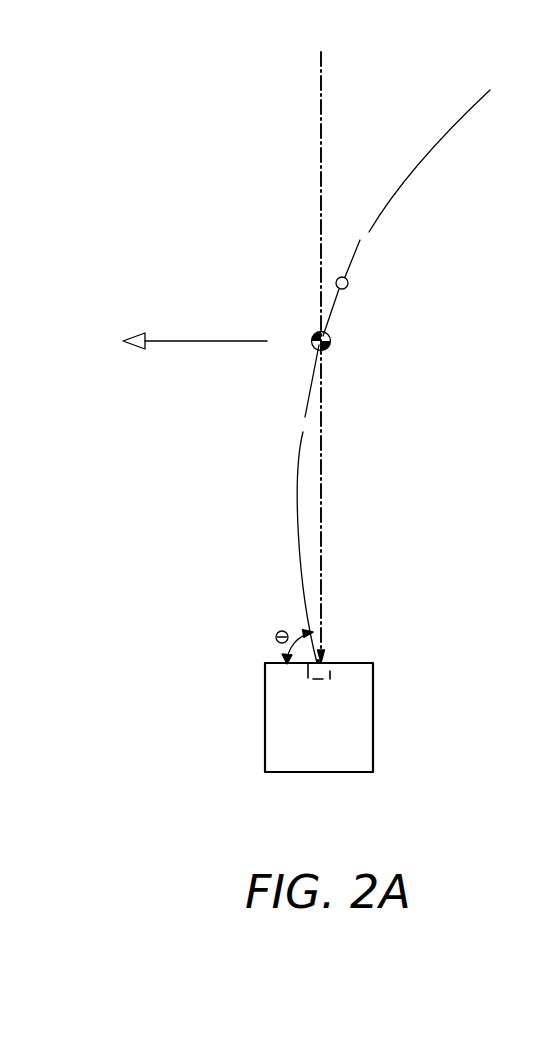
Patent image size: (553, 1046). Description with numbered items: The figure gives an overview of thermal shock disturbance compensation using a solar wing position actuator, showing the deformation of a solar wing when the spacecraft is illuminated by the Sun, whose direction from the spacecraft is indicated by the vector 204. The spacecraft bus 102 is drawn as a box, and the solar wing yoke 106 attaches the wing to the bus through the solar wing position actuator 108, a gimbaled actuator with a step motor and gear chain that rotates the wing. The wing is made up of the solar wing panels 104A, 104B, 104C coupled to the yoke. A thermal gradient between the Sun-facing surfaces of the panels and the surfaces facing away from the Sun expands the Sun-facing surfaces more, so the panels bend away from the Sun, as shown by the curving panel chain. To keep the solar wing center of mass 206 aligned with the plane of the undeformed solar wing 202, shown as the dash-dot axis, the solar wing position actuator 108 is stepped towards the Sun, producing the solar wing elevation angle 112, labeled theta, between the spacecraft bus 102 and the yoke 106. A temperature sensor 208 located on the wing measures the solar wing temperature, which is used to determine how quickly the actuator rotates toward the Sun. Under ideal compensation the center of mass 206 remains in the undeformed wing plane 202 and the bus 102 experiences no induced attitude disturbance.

The spacecraft bus 102 is at (262, 732).
The solar wing panel 104A is at (280, 478).
The solar wing panel 104B is at (328, 318).
The solar wing panel 104C is at (417, 167).
The solar wing yoke 106 is at (322, 638).
The solar wing position actuator 108 is at (333, 674).
The solar wing elevation angle 112 is at (284, 650).
The plane of the undeformed solar wing 202 is at (322, 520).
The vector to the Sun 204 is at (192, 341).
The solar wing center of mass 206 is at (330, 343).
The temperature sensor 208 is at (348, 286).